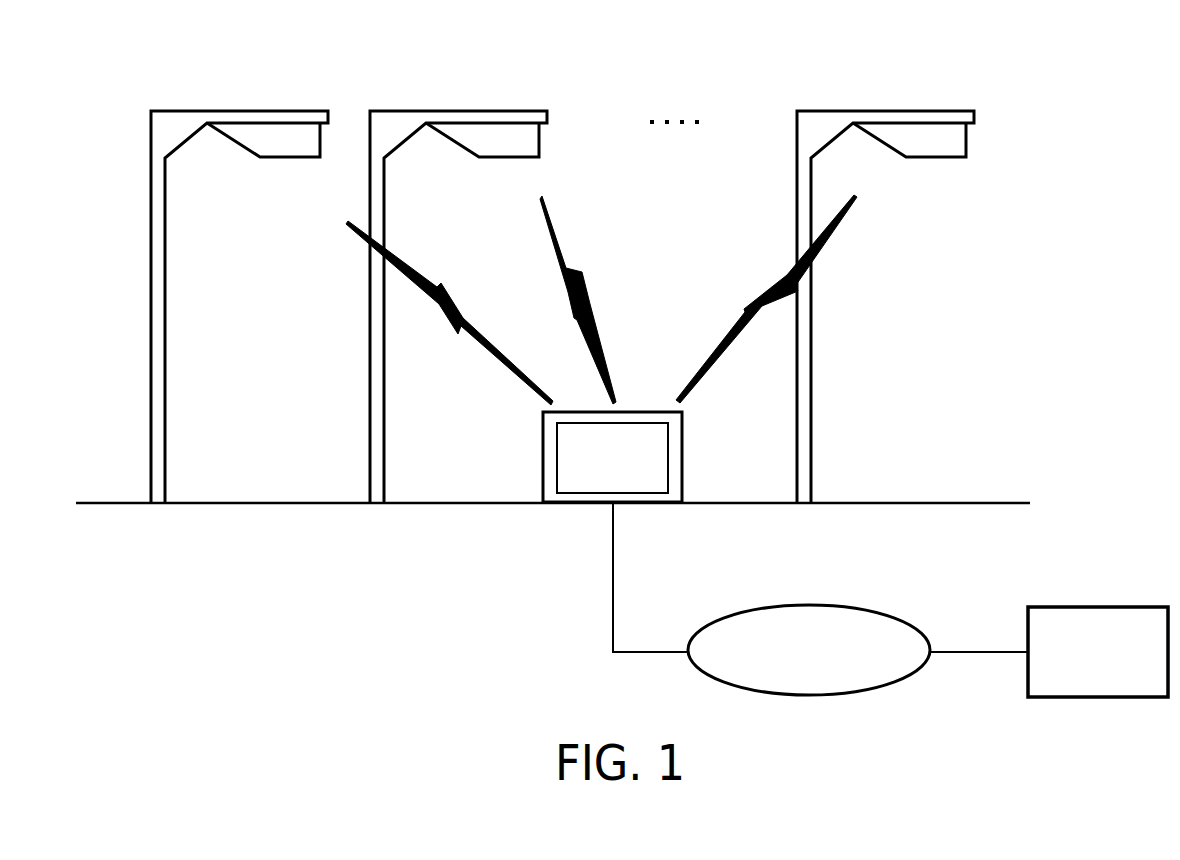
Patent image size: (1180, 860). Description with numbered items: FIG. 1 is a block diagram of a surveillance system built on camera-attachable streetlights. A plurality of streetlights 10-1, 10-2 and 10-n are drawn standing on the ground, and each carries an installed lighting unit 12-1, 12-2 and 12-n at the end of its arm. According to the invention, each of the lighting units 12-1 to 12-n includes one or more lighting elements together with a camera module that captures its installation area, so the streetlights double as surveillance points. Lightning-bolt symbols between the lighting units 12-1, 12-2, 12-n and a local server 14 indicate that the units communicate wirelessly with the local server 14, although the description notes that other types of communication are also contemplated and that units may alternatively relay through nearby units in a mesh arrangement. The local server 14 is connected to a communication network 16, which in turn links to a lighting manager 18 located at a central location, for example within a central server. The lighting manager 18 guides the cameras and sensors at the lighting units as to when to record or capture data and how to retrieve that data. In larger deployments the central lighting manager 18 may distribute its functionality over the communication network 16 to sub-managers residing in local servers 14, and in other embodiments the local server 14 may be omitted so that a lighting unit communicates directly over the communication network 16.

The streetlight 10-1 is at (239, 266).
The streetlight 10-2 is at (458, 266).
The streetlight 10-n is at (885, 266).
The lighting unit 12-1 is at (272, 160).
The lighting unit 12-2 is at (502, 160).
The lighting unit 12-n is at (932, 160).
The local server 14 is at (682, 456).
The communication network 16 is at (812, 697).
The lighting manager 18 is at (1097, 698).